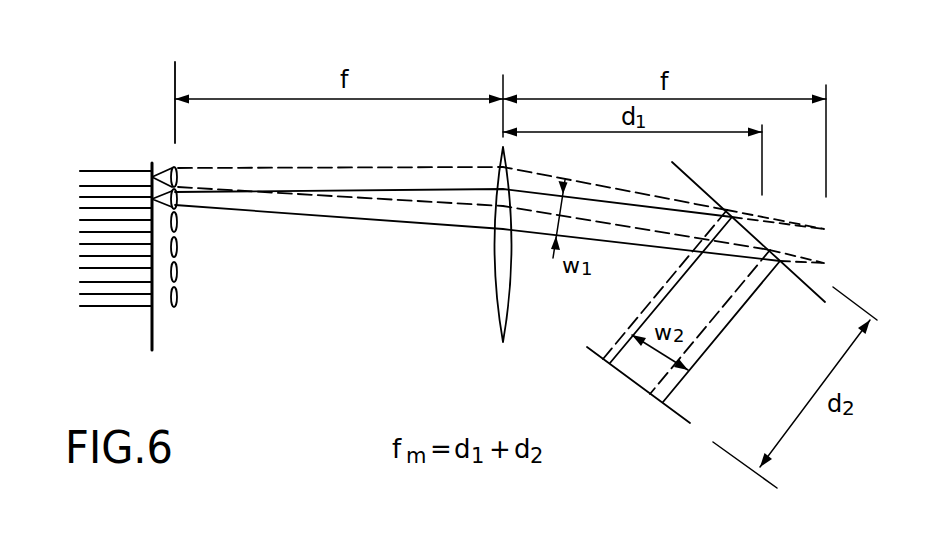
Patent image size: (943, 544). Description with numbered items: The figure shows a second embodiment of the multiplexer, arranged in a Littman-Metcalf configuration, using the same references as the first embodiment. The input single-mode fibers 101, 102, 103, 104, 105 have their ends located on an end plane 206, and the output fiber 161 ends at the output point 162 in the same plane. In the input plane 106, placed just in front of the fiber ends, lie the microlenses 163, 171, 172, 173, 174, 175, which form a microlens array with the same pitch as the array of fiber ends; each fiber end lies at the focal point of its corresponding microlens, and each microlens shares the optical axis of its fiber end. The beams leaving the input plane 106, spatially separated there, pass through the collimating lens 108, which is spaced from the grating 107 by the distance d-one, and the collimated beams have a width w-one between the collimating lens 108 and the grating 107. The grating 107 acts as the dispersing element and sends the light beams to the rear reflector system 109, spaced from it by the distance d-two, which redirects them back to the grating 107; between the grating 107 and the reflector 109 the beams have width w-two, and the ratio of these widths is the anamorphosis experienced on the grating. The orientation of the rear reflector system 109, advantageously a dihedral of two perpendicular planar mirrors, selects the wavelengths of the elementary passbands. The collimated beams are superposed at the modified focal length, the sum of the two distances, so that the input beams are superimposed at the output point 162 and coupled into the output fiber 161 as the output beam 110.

The input single-mode fiber 101 is at (80, 198).
The input single-mode fiber 102 is at (80, 227).
The input single-mode fiber 103 is at (78, 243).
The input single-mode fiber 104 is at (80, 272).
The input single-mode fiber 105 is at (82, 294).
The input plane 106 is at (176, 72).
The grating 107 is at (810, 283).
The collimating lens 108 is at (503, 302).
The rear reflector system 109 is at (640, 387).
The output beam 110 is at (318, 168).
The output fiber 161 is at (112, 180).
The output point 162 is at (152, 177).
The microlens 163 is at (178, 178).
The microlens 171 is at (180, 205).
The microlens 172 is at (178, 222).
The microlens 173 is at (178, 248).
The microlens 174 is at (178, 273).
The microlens 175 is at (178, 297).
The end plane 206 is at (152, 346).